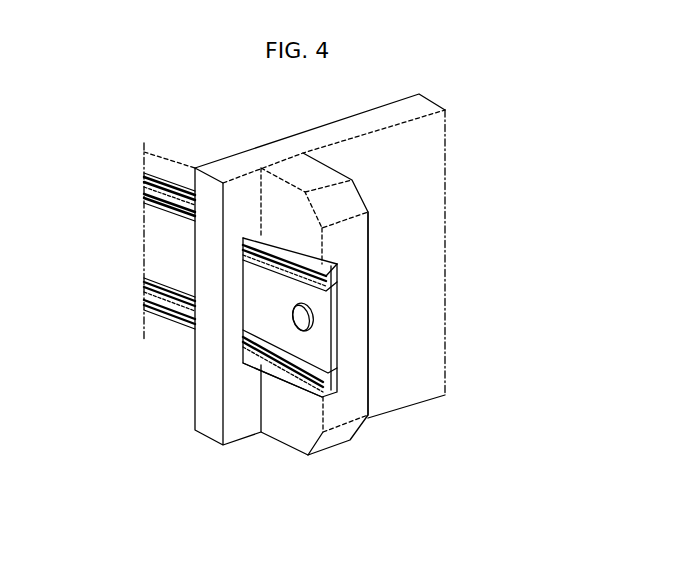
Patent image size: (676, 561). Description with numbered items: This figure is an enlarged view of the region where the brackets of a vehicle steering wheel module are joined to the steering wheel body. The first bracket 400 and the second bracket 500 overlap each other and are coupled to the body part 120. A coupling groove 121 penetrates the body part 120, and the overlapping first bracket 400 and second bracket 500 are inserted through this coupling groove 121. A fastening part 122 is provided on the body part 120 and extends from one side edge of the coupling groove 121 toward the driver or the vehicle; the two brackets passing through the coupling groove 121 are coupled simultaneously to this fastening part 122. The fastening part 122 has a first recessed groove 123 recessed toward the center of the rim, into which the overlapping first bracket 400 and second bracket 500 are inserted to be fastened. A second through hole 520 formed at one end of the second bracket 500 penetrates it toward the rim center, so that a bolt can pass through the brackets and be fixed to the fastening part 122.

The body part 120 is at (422, 400).
The coupling groove 121 is at (263, 268).
The fastening part 122 is at (360, 338).
The first recessed groove 123 is at (343, 390).
The first bracket 400 is at (337, 270).
The second bracket 500 is at (270, 312).
The second through hole 520 is at (297, 330).